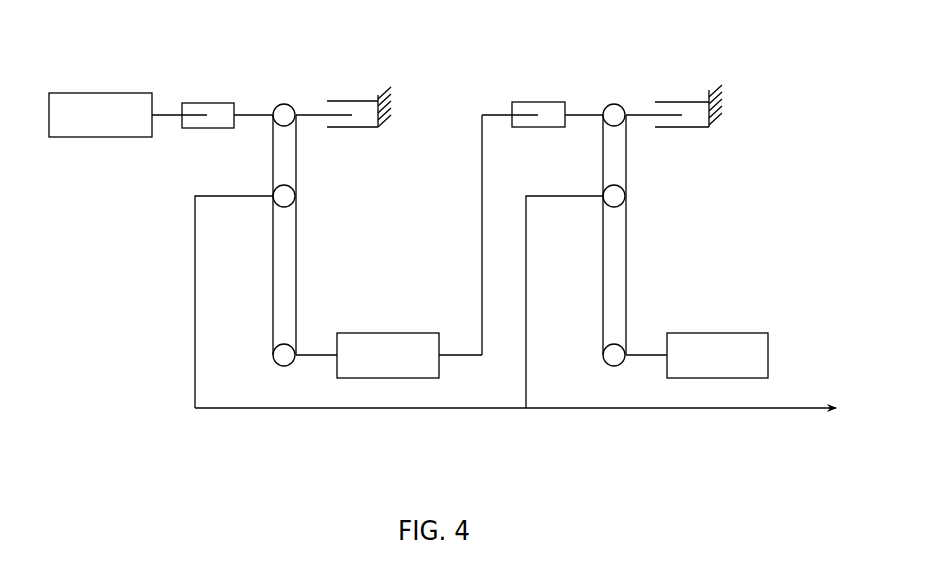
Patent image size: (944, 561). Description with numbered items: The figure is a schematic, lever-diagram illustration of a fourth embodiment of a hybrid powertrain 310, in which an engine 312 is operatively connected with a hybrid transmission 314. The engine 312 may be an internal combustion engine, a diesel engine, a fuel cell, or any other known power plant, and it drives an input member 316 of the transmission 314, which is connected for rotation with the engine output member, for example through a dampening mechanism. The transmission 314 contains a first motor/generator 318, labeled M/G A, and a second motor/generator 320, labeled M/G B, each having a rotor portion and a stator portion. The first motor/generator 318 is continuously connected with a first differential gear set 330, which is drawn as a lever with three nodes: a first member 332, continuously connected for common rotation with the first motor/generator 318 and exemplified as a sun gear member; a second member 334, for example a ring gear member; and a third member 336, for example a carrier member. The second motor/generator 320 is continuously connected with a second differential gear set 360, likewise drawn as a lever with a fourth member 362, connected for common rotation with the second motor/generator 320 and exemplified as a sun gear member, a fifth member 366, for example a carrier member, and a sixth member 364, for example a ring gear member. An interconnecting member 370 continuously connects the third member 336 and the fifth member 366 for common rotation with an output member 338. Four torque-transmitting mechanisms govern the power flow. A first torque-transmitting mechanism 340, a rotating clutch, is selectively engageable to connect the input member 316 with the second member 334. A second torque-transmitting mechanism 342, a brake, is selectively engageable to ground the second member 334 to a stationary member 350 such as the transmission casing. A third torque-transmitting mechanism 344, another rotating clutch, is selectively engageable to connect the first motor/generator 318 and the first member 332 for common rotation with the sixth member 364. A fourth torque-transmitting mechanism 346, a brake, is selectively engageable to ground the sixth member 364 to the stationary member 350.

The hybrid powertrain 310 is at (94, 263).
The engine 312 is at (109, 92).
The hybrid transmission 314 is at (180, 262).
The input member 316 is at (167, 117).
The first motor/generator 318 is at (393, 332).
The second motor/generator 320 is at (738, 332).
The first differential gear set 330 is at (330, 238).
The first member 332 is at (277, 359).
The second member 334 is at (285, 108).
The third member 336 is at (277, 187).
The output member 338 is at (602, 410).
The first torque-transmitting mechanism 340 is at (172, 105).
The second torque-transmitting mechanism 342 is at (330, 119).
The third torque-transmitting mechanism 344 is at (510, 120).
The fourth torque-transmitting mechanism 346 is at (658, 120).
The stationary member 350 is at (385, 93).
The second differential gear set 360 is at (647, 243).
The fourth member 362 is at (608, 362).
The sixth member 364 is at (615, 108).
The fifth member 366 is at (607, 198).
The interconnecting member 370 is at (400, 410).